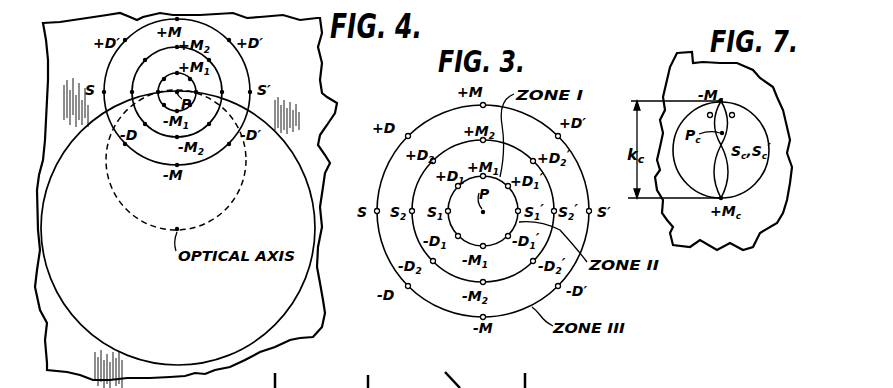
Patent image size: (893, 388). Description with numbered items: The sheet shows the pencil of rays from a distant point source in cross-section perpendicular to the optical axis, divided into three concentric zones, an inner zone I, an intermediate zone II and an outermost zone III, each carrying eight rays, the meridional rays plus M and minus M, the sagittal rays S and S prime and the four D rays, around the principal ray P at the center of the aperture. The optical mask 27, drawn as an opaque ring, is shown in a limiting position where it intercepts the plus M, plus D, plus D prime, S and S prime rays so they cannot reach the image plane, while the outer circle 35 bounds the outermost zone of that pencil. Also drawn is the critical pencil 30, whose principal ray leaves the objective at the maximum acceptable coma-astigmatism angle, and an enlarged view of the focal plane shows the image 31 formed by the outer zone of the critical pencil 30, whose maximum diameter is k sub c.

In FIG. 4, the optical mask 27 is at (320, 95).
In FIG. 4, the critical pencil 30 is at (160, 290).
In FIG. 4, the field circle 35 is at (107, 68).
In FIG. 7, the lens-shaped pupil zones 31 is at (731, 128).